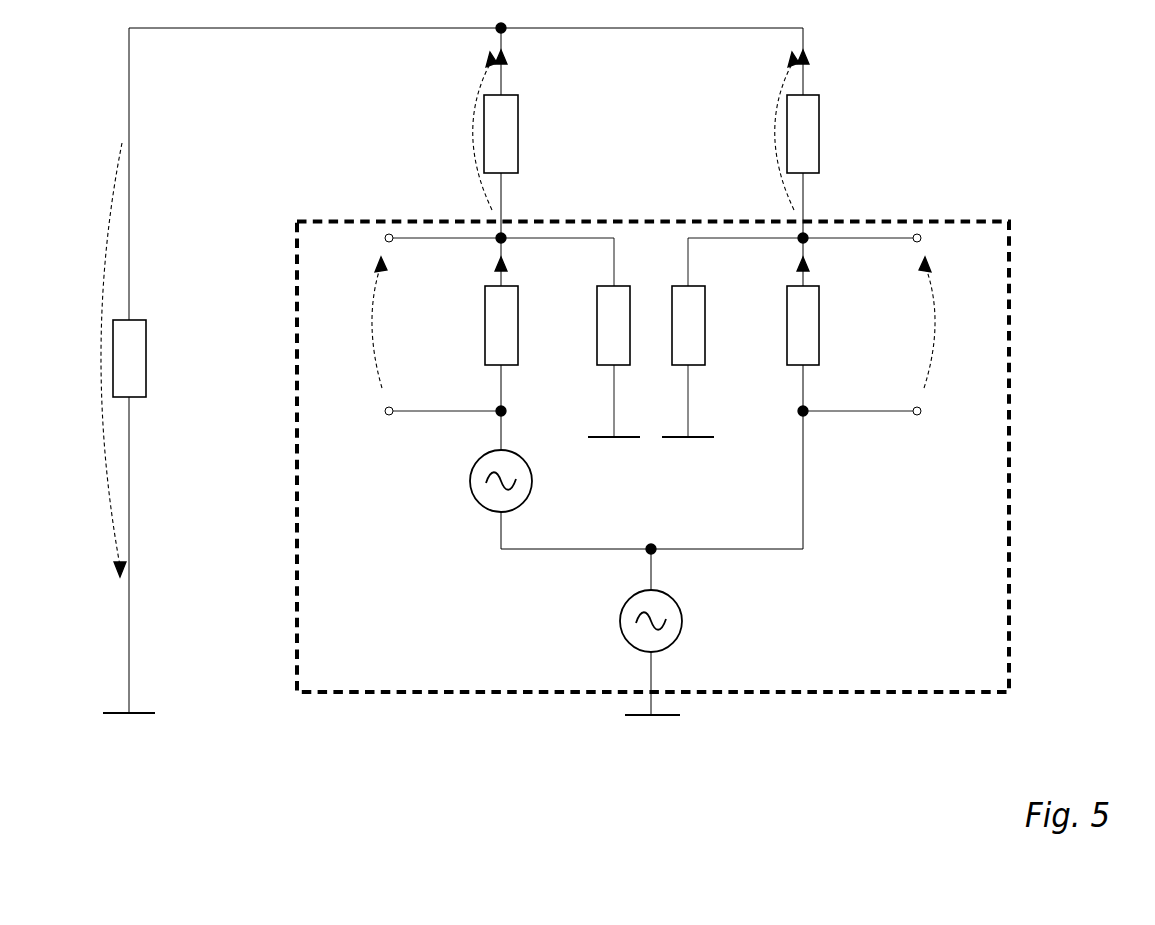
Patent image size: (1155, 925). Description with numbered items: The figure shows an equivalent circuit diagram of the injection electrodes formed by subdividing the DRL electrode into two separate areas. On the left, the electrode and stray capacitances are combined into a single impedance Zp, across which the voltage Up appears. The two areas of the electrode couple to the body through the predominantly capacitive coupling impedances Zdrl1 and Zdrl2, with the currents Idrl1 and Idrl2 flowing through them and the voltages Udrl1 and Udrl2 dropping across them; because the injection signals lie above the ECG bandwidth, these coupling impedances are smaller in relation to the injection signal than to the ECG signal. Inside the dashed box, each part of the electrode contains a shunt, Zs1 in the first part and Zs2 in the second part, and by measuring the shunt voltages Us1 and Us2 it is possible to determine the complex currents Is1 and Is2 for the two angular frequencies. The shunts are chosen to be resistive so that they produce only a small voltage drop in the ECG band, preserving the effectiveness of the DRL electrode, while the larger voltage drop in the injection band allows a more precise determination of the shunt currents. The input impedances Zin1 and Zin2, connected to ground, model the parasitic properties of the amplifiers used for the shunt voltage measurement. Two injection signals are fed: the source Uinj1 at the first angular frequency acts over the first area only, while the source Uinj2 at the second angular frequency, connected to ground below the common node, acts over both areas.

The impedance of combined electrode and stray capacitances Zp is at (184, 371).
The voltage across the combined electrode and stray impedance Up is at (80, 371).
The coupling impedance of the first electrode area Zdrl1 is at (558, 147).
The current through the first coupling impedance Idrl1 is at (533, 71).
The voltage across the first coupling impedance Udrl1 is at (426, 147).
The coupling impedance of the second electrode area Zdrl2 is at (858, 147).
The current through the second coupling impedance Idrl2 is at (834, 71).
The voltage across the second coupling impedance Udrl2 is at (728, 147).
The first input impedance Zin1 is at (554, 337).
The second input impedance Zin2 is at (746, 337).
The first shunt Zs1 is at (449, 337).
The second shunt Zs2 is at (861, 337).
The complex current through the first shunt Is1 is at (531, 278).
The complex current through the second shunt Is2 is at (767, 279).
The voltage across the first shunt Us1 is at (346, 337).
The voltage across the second shunt Us2 is at (963, 337).
The first injection signal Uinj1 is at (543, 458).
The second injection signal Uinj2 is at (693, 600).